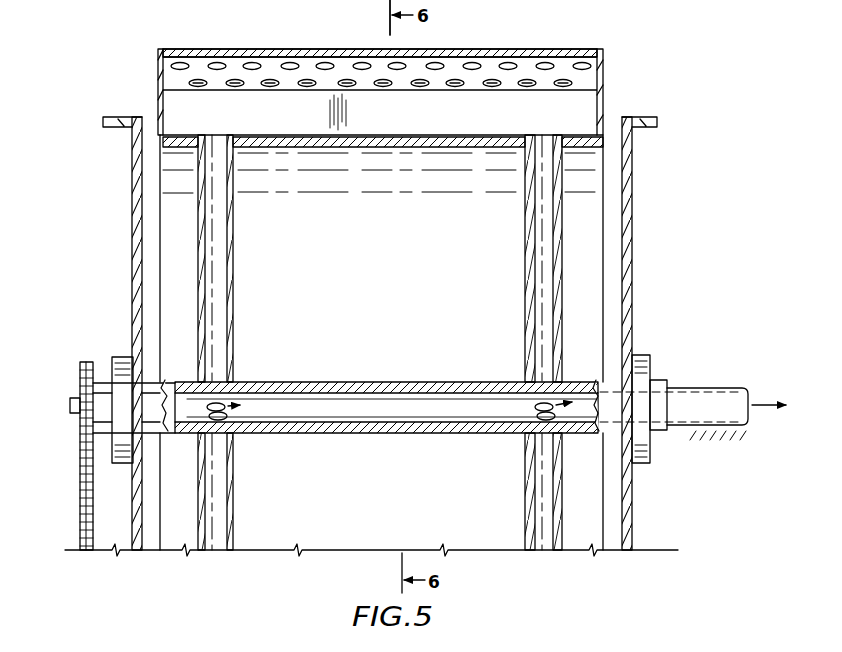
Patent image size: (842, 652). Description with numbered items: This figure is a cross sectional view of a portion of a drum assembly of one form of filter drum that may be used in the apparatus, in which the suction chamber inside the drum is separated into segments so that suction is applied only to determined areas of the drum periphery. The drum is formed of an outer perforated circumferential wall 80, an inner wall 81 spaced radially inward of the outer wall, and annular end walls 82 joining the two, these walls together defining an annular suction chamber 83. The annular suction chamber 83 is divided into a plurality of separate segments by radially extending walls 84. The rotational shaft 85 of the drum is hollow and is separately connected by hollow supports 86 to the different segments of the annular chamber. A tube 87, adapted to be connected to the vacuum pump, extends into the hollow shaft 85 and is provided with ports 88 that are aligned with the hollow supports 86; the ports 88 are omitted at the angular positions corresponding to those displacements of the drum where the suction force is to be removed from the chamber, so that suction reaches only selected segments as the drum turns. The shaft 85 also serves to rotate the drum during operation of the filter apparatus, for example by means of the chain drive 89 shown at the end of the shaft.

The outer perforated circumferential wall 80 is at (327, 49).
The inner wall 81 is at (333, 138).
The annular end walls 82 is at (160, 68).
The annular suction chamber 83 is at (435, 100).
The radially extending walls 84 is at (473, 125).
The rotational shaft 85 is at (380, 382).
The hollow supports 86 is at (233, 268).
The tube 87 is at (695, 387).
The ports 88 is at (222, 420).
The chain drive 89 is at (80, 490).